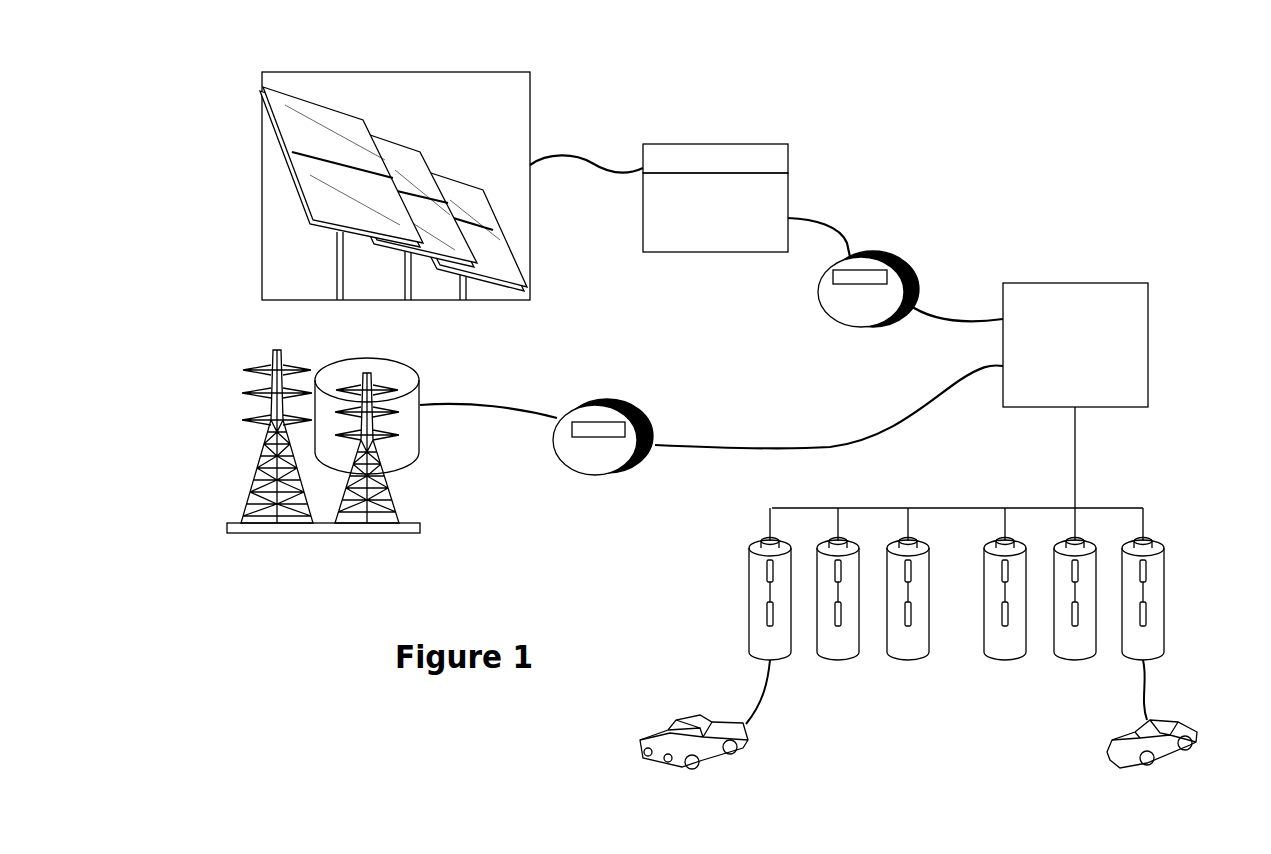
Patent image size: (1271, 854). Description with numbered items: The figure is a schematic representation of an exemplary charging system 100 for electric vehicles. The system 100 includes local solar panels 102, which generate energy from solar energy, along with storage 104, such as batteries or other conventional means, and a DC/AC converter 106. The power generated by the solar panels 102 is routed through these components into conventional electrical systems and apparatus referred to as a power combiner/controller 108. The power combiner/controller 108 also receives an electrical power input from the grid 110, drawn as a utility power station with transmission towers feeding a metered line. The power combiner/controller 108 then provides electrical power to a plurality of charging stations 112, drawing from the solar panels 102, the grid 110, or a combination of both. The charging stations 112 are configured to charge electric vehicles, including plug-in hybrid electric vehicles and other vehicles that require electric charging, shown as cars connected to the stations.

The charging system 100 is at (1120, 183).
The solar panels 102 is at (413, 98).
The storage 104 is at (722, 144).
The DC/AC converter 106 is at (710, 233).
The power combiner/controller 108 is at (1130, 320).
The grid 110 is at (229, 440).
The charging stations 112 is at (848, 615).